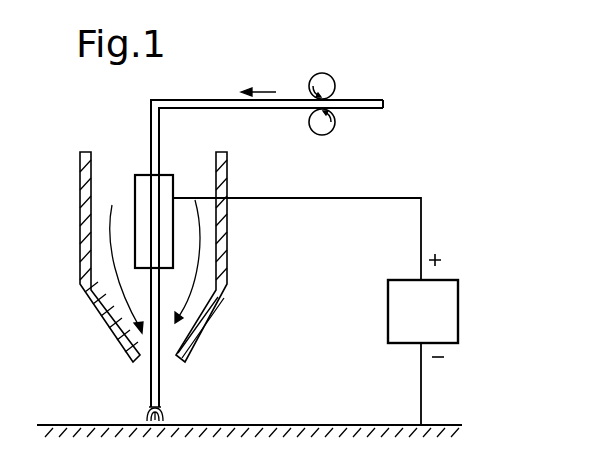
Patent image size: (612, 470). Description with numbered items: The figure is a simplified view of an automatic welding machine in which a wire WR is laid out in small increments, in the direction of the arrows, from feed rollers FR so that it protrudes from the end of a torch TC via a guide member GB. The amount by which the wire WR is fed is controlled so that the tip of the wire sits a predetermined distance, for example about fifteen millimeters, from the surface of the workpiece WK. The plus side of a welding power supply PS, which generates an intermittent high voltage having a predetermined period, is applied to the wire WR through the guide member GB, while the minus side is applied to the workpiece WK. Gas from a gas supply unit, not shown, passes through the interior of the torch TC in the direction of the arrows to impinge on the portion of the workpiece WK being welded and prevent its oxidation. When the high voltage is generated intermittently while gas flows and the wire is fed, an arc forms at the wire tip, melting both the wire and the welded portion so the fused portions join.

The feed rollers FR is at (327, 78).
The wire WR is at (372, 99).
The guide member GB is at (166, 175).
The torch TC is at (228, 251).
The welding power supply PS is at (443, 283).
The workpiece WK is at (267, 424).